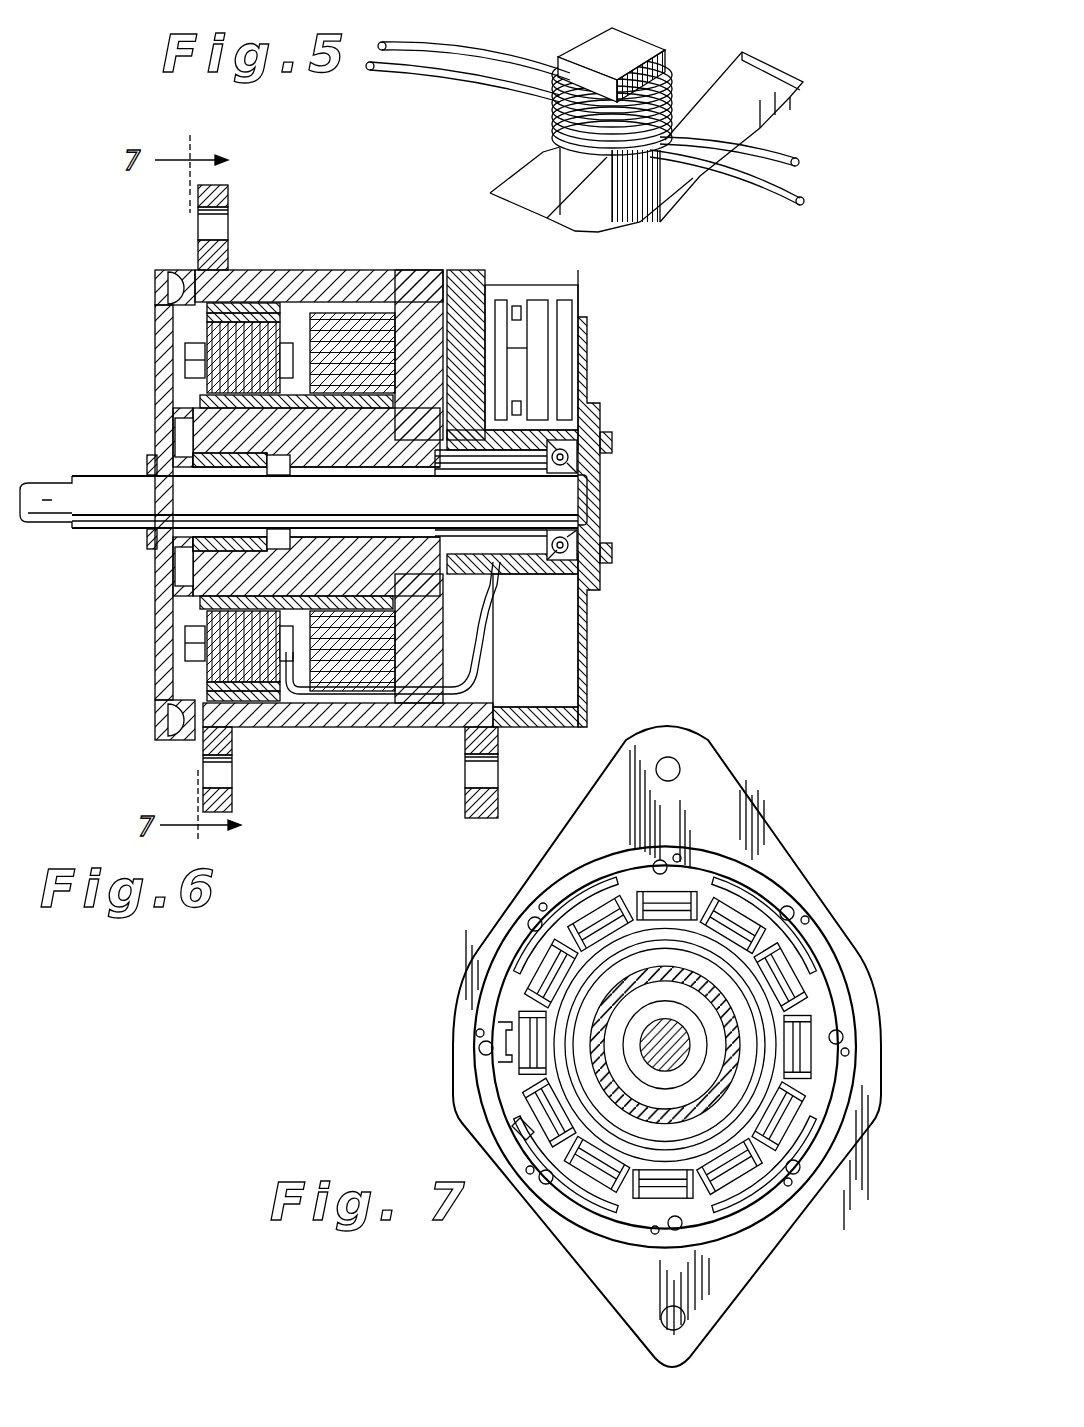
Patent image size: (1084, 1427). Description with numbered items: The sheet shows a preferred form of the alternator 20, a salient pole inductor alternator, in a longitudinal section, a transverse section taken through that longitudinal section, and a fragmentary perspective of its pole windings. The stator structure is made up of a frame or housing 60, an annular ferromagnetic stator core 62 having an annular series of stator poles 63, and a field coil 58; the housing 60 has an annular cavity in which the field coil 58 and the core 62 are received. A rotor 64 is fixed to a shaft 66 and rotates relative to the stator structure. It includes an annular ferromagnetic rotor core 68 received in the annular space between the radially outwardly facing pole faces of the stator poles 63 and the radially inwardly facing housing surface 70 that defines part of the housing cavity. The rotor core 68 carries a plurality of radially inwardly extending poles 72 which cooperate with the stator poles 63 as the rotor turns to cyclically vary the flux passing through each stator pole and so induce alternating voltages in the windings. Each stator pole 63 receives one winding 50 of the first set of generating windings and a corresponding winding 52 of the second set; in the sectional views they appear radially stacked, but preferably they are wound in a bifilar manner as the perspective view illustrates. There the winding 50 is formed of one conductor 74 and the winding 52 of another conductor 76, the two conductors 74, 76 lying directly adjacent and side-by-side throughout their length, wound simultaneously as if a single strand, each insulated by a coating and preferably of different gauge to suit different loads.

In FIG. 6, the alternator 20 is at (426, 244).
In FIG. 6, the winding 50 is at (188, 348).
In FIG. 7, the winding 50 is at (780, 950).
In FIG. 6, the winding 52 is at (190, 368).
In FIG. 7, the winding 52 is at (773, 983).
In FIG. 6, the field coil 58 is at (420, 270).
In FIG. 6, the housing 60 is at (392, 266).
In FIG. 7, the housing 60 is at (813, 927).
In FIG. 5, the stator core 62 is at (673, 173).
In FIG. 6, the stator core 62 is at (294, 306).
In FIG. 5, the stator pole 63 is at (630, 50).
In FIG. 7, the stator pole 63 is at (487, 1047).
In FIG. 6, the rotor 64 is at (157, 273).
In FIG. 6, the shaft 66 is at (101, 485).
In FIG. 6, the rotor core 68 is at (222, 306).
In FIG. 7, the rotor core 68 is at (760, 887).
In FIG. 6, the housing surface 70 is at (250, 306).
In FIG. 7, the housing surface 70 is at (787, 892).
In FIG. 7, the rotor pole 72 is at (805, 925).
In FIG. 5, the conductor 74 is at (453, 43).
In FIG. 5, the conductor 76 is at (440, 63).